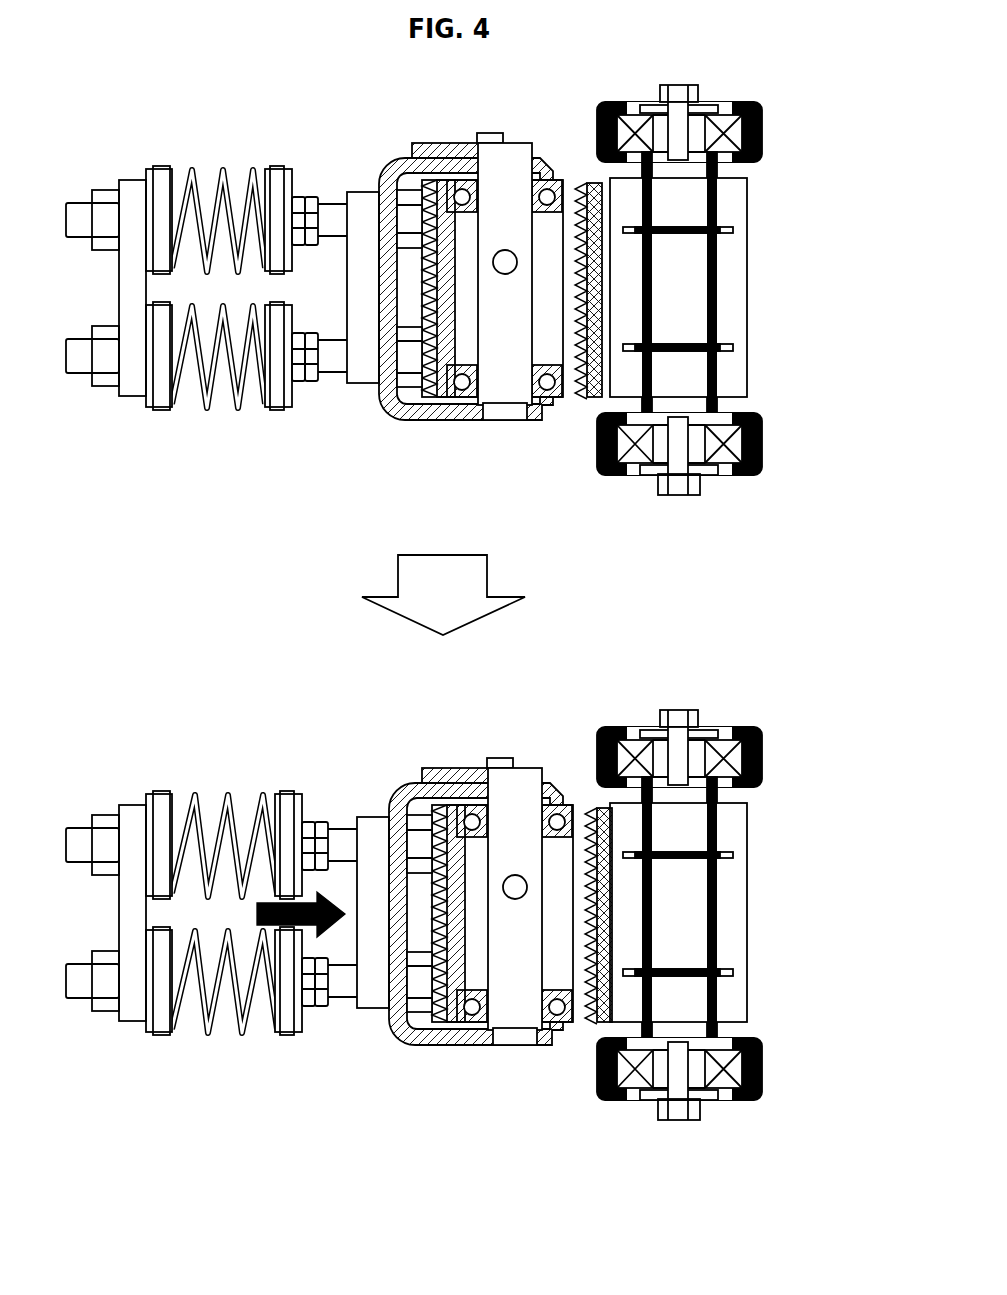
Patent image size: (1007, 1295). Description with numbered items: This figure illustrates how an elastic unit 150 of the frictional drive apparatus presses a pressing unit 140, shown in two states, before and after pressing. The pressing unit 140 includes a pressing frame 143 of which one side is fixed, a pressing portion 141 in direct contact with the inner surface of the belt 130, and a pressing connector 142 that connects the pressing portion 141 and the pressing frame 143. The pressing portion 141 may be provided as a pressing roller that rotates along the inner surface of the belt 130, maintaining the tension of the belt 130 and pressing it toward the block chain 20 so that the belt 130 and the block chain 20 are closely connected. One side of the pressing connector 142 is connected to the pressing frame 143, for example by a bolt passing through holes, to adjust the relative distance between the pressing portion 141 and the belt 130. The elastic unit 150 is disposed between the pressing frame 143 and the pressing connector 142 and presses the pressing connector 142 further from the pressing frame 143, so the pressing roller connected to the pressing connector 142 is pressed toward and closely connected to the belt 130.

The block chain 20 is at (743, 285).
The belt 130 is at (595, 190).
The pressing unit 140 is at (319, 655).
The pressing portion 141 is at (413, 420).
The pressing connector 142 is at (378, 402).
The pressing frame 143 is at (132, 392).
The elastic unit 150 is at (220, 325).